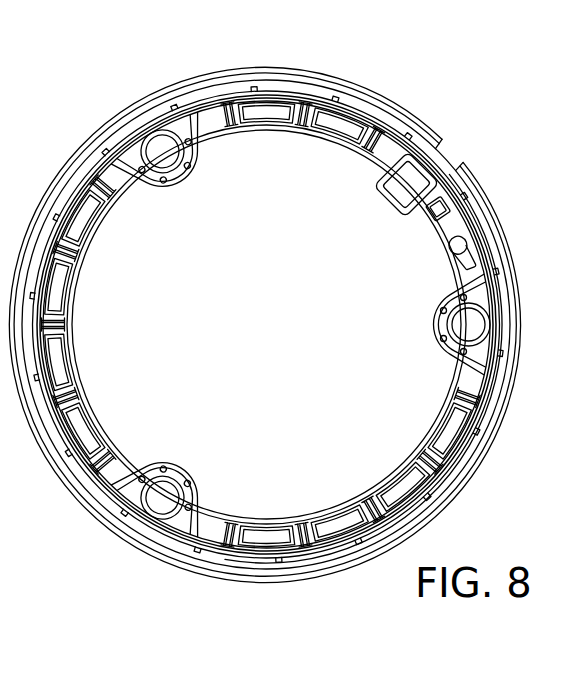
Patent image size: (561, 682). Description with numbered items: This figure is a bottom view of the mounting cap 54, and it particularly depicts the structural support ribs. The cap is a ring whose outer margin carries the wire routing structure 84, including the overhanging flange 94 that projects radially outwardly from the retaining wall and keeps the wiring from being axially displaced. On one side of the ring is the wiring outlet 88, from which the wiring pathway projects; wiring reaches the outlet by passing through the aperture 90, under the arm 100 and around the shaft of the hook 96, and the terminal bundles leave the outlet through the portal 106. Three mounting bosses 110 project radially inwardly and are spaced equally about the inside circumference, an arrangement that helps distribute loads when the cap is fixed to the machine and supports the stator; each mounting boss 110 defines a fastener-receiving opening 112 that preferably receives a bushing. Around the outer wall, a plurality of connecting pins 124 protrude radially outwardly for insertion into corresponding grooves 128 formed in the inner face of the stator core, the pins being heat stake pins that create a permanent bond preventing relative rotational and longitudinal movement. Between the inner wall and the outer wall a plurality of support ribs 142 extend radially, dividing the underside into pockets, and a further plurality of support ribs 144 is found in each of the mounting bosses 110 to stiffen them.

The mounting cap 54 is at (437, 95).
The wire routing structure 84 is at (205, 85).
The wiring outlet 88 is at (425, 248).
The aperture 90 is at (451, 155).
The overhanging flange 94 is at (470, 470).
The hook 96 is at (416, 203).
The arm 100 is at (423, 188).
The portal 106 is at (0, 568).
The mounting boss 110 is at (178, 480).
The fastener-receiving opening 112 is at (180, 468).
The connecting pin 124 is at (334, 108).
The groove 128 is at (105, 153).
The support rib 142 is at (49, 325).
The support rib 144 is at (180, 167).